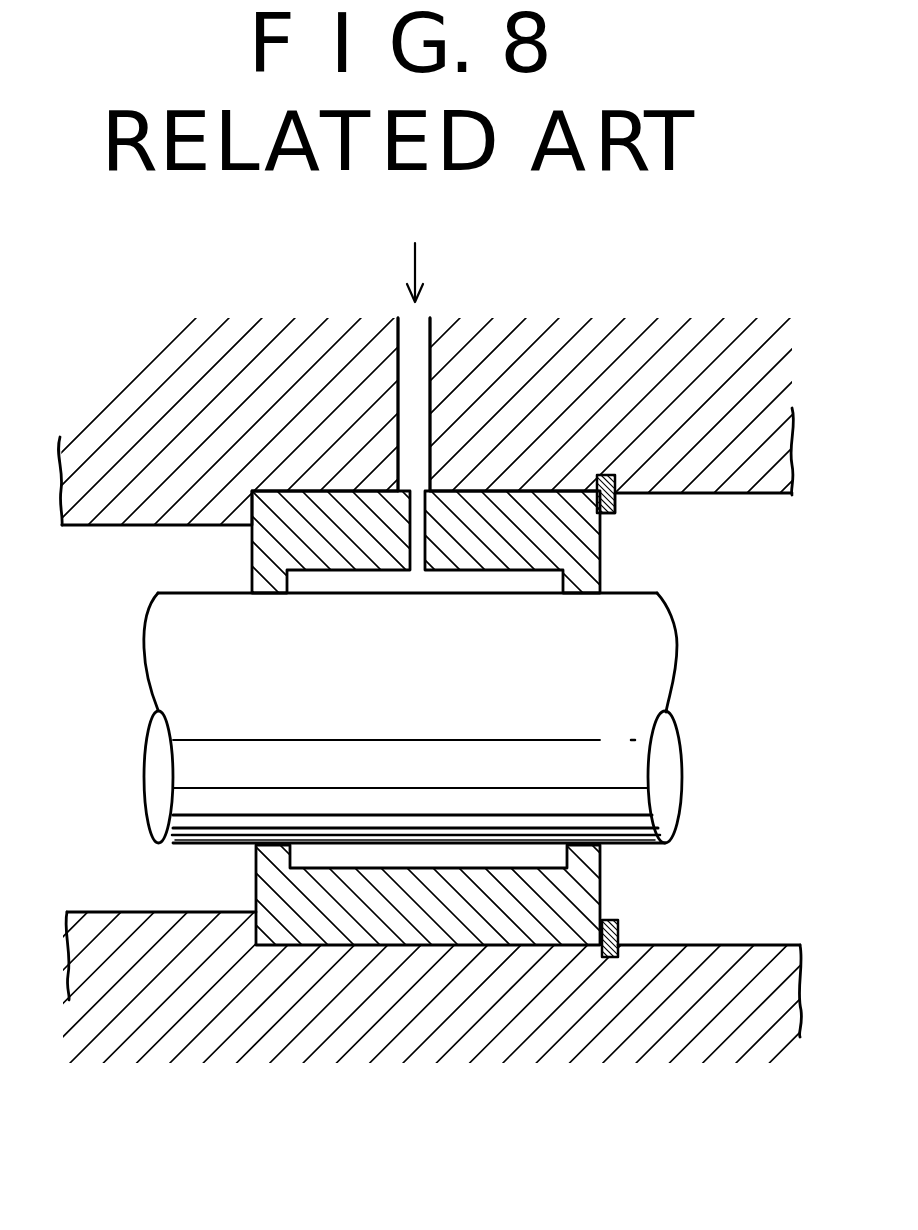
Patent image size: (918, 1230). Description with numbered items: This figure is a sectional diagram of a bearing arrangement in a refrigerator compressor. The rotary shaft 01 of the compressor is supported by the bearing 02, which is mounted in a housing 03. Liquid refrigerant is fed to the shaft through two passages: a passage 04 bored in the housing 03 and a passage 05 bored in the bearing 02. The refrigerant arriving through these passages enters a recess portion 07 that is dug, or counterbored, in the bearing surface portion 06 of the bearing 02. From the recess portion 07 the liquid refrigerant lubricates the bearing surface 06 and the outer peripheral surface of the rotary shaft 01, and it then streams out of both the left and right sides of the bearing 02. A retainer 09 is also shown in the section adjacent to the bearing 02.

The rotary shaft 01 is at (677, 643).
The bearing 02 is at (257, 890).
The housing 03 is at (108, 527).
The passage 04 is at (420, 357).
The passage 05 is at (412, 512).
The bearing surface portion 06 is at (585, 843).
The recess portion 07 is at (538, 577).
The retainer 09 is at (619, 935).